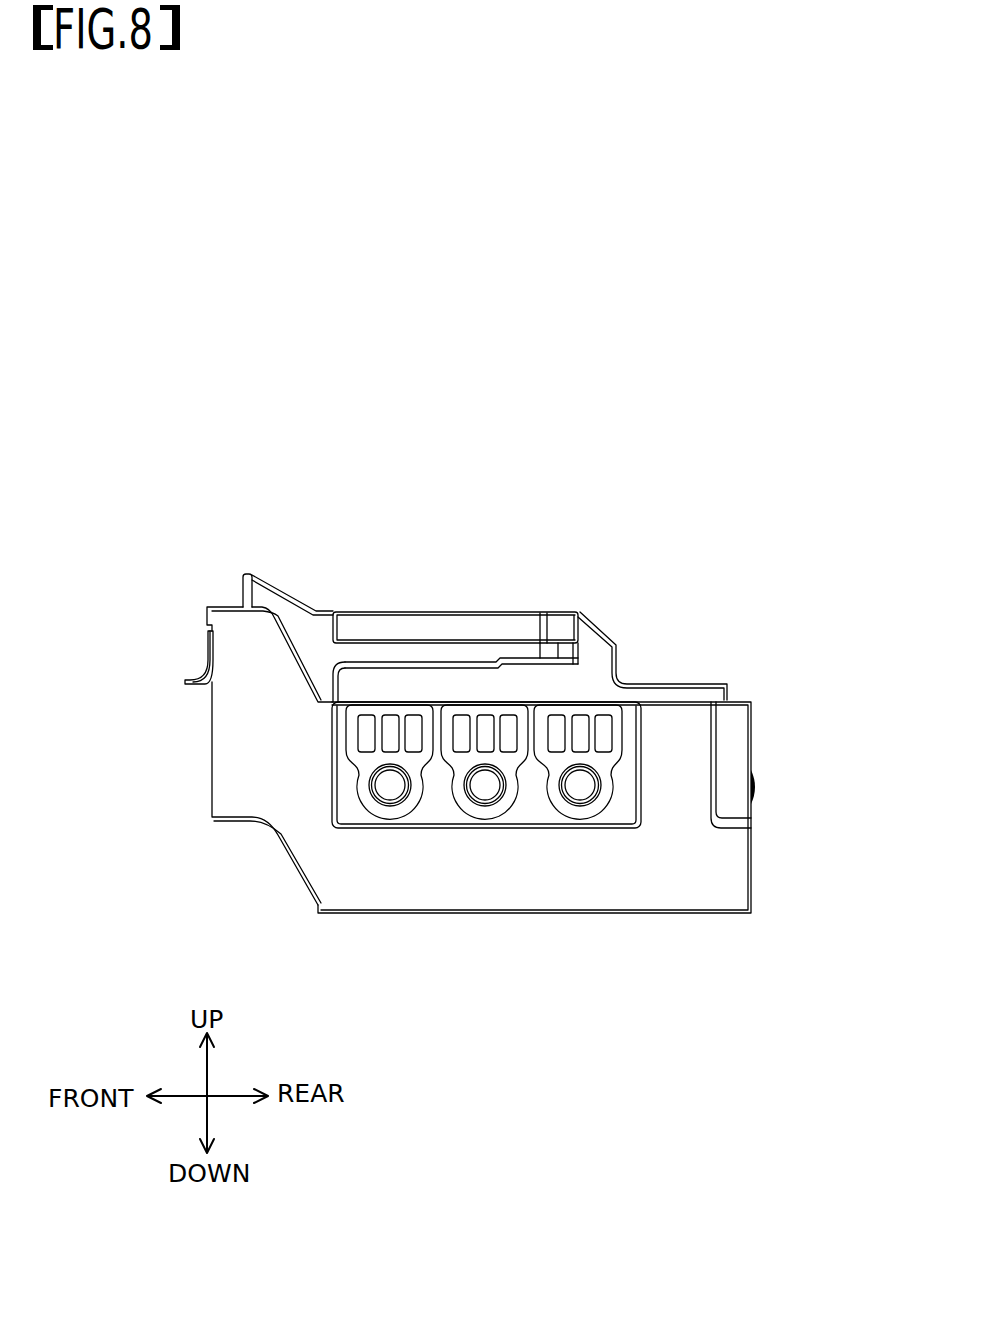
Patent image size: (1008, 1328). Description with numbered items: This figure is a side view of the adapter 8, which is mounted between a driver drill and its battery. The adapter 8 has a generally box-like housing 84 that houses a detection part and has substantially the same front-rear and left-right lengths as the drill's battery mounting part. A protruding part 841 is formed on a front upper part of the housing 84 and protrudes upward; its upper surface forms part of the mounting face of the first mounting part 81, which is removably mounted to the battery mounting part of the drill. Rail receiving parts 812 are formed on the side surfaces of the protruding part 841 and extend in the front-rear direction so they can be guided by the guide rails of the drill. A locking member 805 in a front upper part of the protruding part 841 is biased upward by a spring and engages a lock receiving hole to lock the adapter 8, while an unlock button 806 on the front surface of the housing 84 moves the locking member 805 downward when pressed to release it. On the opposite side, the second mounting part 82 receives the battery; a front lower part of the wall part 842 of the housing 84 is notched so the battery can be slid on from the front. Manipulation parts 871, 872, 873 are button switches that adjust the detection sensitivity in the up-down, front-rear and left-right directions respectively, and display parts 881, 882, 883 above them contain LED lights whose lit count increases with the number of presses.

The adapter 8 is at (715, 472).
The first mounting part 81 is at (562, 573).
The rail receiving parts 812 is at (495, 641).
The locking member 805 is at (247, 576).
The unlock button 806 is at (185, 680).
The housing 84 is at (752, 868).
The protruding part 841 is at (318, 663).
The wall part 842 is at (702, 850).
The second mounting part 82 is at (670, 933).
The manipulation part 871 is at (387, 787).
The manipulation part 872 is at (485, 787).
The manipulation part 873 is at (580, 787).
The display part 881 is at (358, 745).
The display part 882 is at (457, 743).
The display part 883 is at (553, 750).